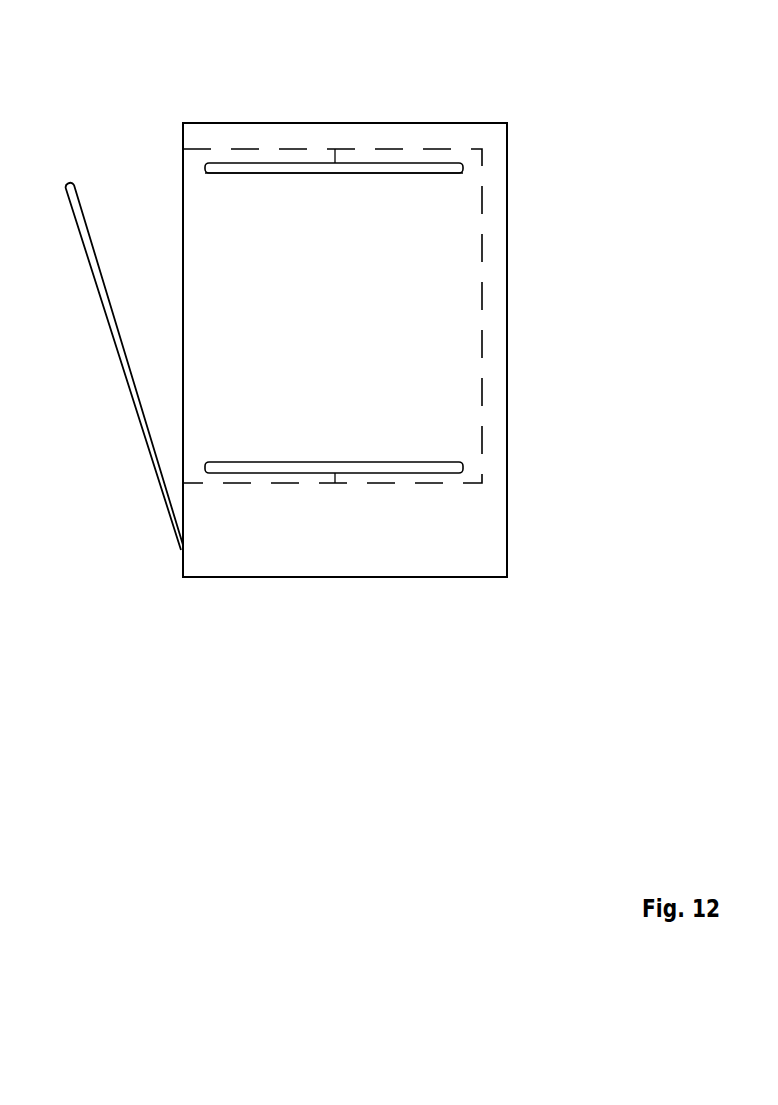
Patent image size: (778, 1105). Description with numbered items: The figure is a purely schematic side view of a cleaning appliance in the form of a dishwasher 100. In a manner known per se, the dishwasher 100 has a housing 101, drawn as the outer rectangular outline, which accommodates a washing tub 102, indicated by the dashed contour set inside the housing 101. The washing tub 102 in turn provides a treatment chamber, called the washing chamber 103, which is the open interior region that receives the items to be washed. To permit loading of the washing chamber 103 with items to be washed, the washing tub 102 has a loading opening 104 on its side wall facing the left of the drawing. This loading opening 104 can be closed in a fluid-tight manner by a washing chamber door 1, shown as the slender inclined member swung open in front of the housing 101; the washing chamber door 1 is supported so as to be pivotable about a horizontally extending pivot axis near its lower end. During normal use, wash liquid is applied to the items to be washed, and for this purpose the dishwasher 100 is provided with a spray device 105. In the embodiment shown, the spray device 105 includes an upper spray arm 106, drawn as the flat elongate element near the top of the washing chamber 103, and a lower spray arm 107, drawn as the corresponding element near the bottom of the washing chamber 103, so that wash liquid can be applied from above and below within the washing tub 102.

The washing chamber door 1 is at (116, 366).
The dishwasher 100 is at (536, 155).
The housing 101 is at (282, 577).
The washing tub 102 is at (380, 483).
The washing chamber 103 is at (350, 288).
The loading opening 104 is at (183, 303).
The spray device 105 is at (420, 176).
The upper spray arm 106 is at (273, 175).
The lower spray arm 107 is at (316, 569).